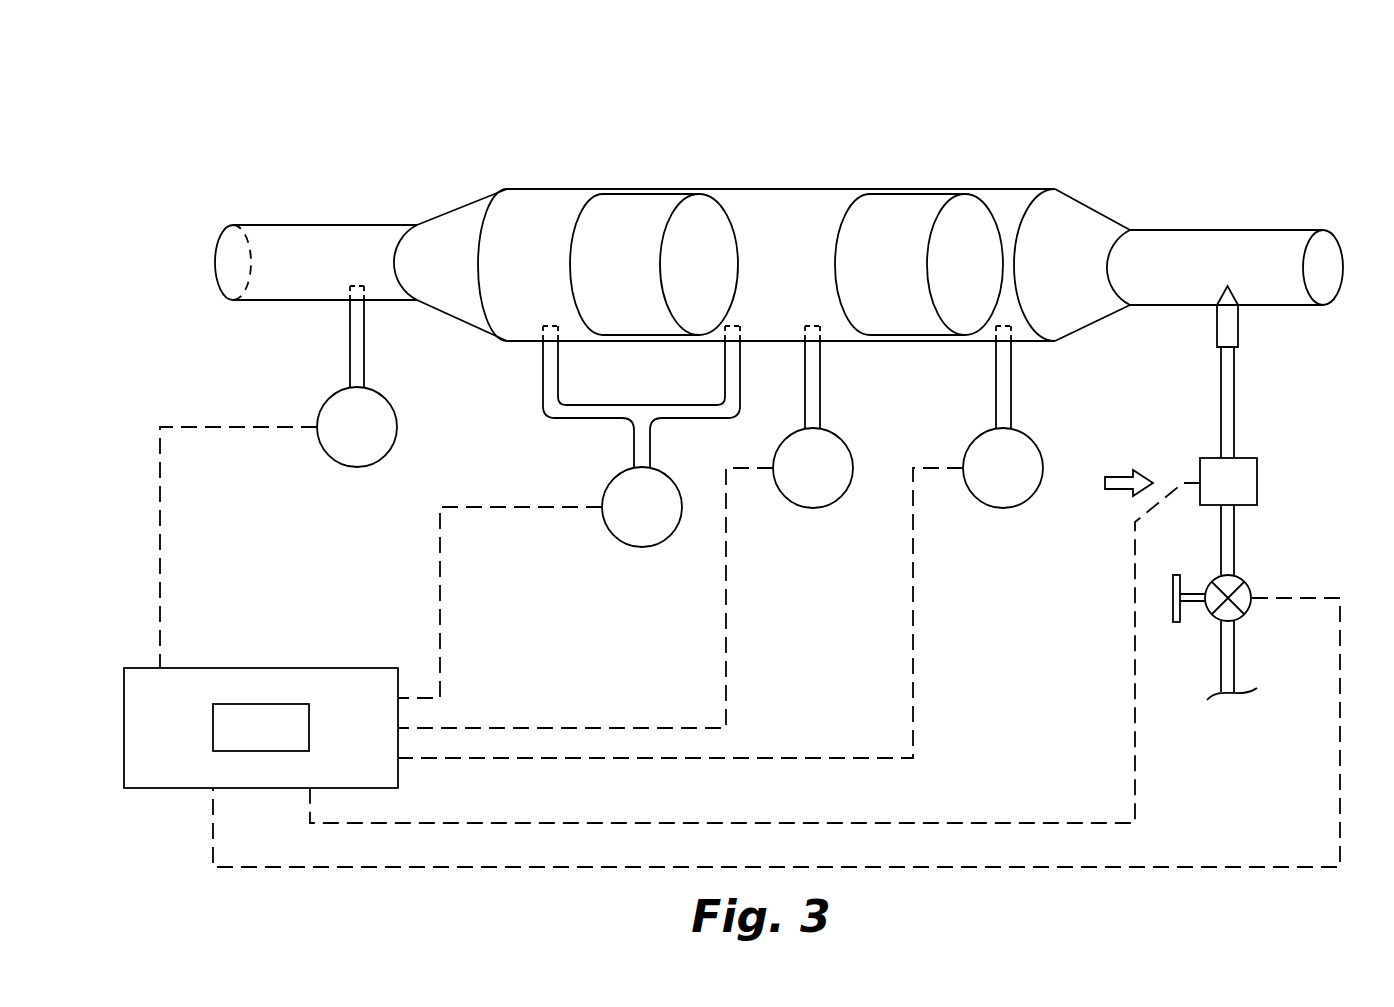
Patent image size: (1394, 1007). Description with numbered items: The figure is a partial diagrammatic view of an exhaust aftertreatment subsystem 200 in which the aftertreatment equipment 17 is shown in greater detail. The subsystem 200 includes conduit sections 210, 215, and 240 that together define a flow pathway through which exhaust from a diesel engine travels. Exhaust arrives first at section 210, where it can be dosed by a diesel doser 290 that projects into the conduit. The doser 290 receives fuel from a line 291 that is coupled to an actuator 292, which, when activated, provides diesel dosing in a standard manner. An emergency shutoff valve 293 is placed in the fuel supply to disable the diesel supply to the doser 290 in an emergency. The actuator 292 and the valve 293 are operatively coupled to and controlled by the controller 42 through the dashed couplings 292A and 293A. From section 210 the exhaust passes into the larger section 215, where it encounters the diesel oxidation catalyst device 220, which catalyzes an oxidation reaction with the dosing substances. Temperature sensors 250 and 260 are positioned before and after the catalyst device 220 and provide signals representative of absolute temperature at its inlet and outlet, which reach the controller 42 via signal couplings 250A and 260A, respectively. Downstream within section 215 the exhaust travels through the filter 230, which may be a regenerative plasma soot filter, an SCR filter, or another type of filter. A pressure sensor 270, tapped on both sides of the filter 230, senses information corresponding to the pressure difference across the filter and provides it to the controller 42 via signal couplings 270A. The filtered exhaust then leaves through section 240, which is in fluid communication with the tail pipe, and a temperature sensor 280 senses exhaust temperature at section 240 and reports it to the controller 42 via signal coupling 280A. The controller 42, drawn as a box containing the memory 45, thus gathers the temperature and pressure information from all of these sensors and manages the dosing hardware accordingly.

The subsystem 200 is at (1137, 126).
The aftertreatment equipment 17 is at (1017, 187).
The conduit section 215 is at (772, 190).
The filter 230 is at (653, 190).
The diesel oxidation catalyst device 220 is at (918, 190).
The conduit section 240 is at (282, 258).
The conduit section 210 is at (1228, 230).
The temperature sensor 280 is at (380, 464).
The signal coupling 280A is at (225, 429).
The pressure sensor 270 is at (604, 528).
The signal couplings 270A is at (480, 509).
The temperature sensor 260 is at (852, 483).
The signal coupling 260A is at (725, 673).
The temperature sensor 250 is at (993, 509).
The signal coupling 250A is at (850, 757).
The diesel doser 290 is at (1217, 323).
The line 291 is at (1237, 405).
The actuator 292 is at (1258, 487).
The coupling to actuator 292A is at (1135, 780).
The emergency shutoff valve 293 is at (1252, 606).
The coupling to shutoff valve 293A is at (1262, 866).
The controller 42 is at (213, 668).
The memory 45 is at (266, 704).